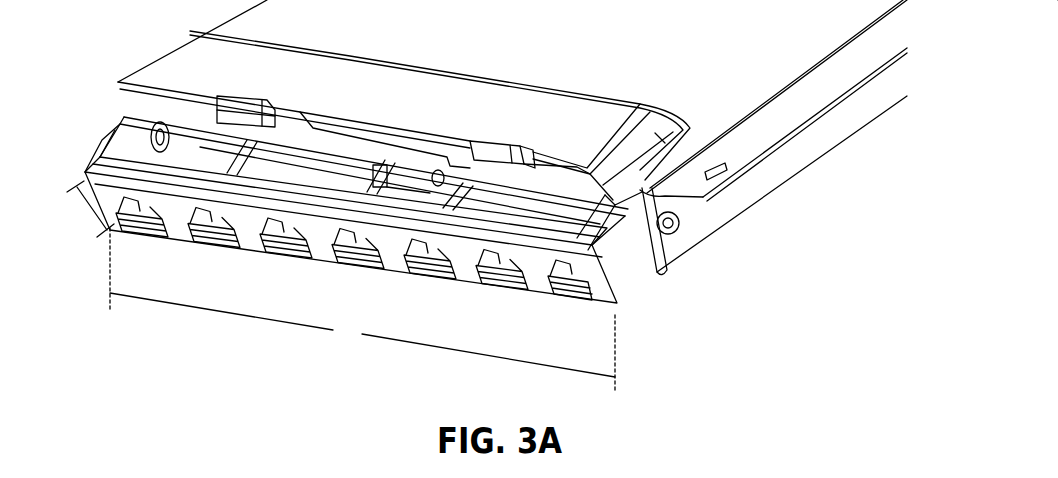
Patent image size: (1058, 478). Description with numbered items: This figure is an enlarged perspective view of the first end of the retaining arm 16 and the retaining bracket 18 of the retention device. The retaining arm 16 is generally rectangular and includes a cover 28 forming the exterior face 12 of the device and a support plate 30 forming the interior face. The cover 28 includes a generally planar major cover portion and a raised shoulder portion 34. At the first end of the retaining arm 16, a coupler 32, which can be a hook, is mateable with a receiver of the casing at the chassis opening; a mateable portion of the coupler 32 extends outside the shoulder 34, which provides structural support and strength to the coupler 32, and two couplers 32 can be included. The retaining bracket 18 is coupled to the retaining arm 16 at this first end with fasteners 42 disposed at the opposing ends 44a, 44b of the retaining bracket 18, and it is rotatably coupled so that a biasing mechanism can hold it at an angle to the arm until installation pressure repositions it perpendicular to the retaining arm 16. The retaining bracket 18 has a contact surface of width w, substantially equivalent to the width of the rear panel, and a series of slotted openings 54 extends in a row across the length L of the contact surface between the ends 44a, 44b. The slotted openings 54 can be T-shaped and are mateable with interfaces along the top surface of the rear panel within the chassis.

The exterior face 12 is at (515, 29).
The retaining arm 16 is at (843, 176).
The retaining bracket 18 is at (92, 147).
The cover 28 is at (713, 59).
The support plate 30 is at (737, 197).
The coupler 32 is at (217, 97).
The raised shoulder portion 34 is at (393, 104).
The fasteners 42 is at (677, 223).
The first end of retaining bracket 44a is at (118, 137).
The second end of retaining bracket 44b is at (627, 263).
The slotted openings 54 is at (213, 230).